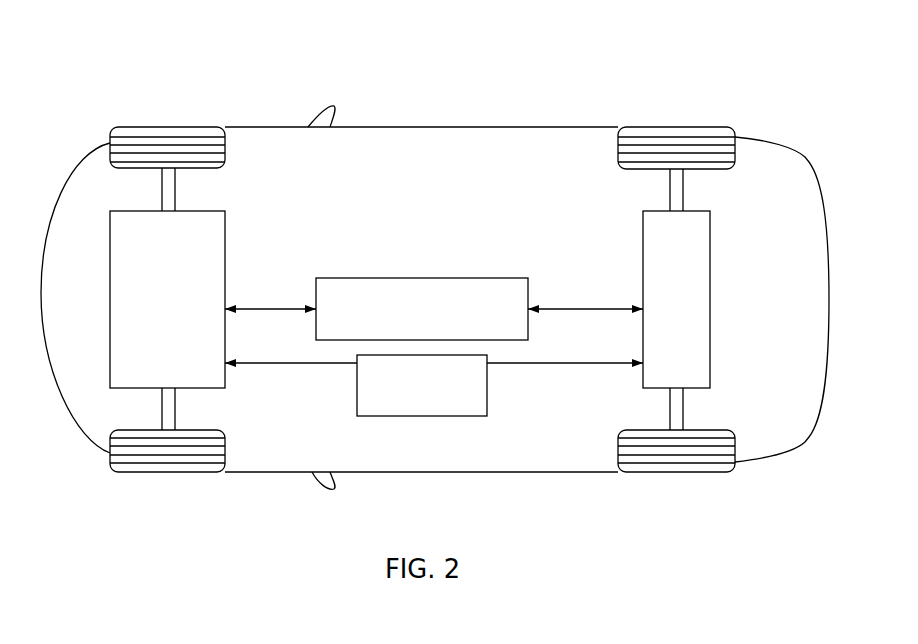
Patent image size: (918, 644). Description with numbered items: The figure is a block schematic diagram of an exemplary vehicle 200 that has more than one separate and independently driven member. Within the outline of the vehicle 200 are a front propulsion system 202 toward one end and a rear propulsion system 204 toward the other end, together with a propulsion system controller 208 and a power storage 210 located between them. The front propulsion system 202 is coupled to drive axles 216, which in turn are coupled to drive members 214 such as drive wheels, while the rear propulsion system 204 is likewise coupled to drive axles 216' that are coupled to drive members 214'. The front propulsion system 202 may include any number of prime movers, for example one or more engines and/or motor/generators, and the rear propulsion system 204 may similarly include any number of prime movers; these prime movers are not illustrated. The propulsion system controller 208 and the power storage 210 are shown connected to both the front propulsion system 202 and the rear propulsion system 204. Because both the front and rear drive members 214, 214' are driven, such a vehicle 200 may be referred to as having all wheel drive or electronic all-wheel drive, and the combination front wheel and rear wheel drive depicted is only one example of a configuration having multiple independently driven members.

The vehicle 200 is at (110, 100).
The front propulsion system 202 is at (223, 232).
The rear propulsion system 204 is at (710, 232).
The propulsion system controller 208 is at (530, 293).
The power storage 210 is at (489, 389).
The drive members 214 is at (167, 301).
The drive members 214' is at (676, 301).
The drive axles 216 is at (192, 299).
The drive axles 216' is at (702, 299).